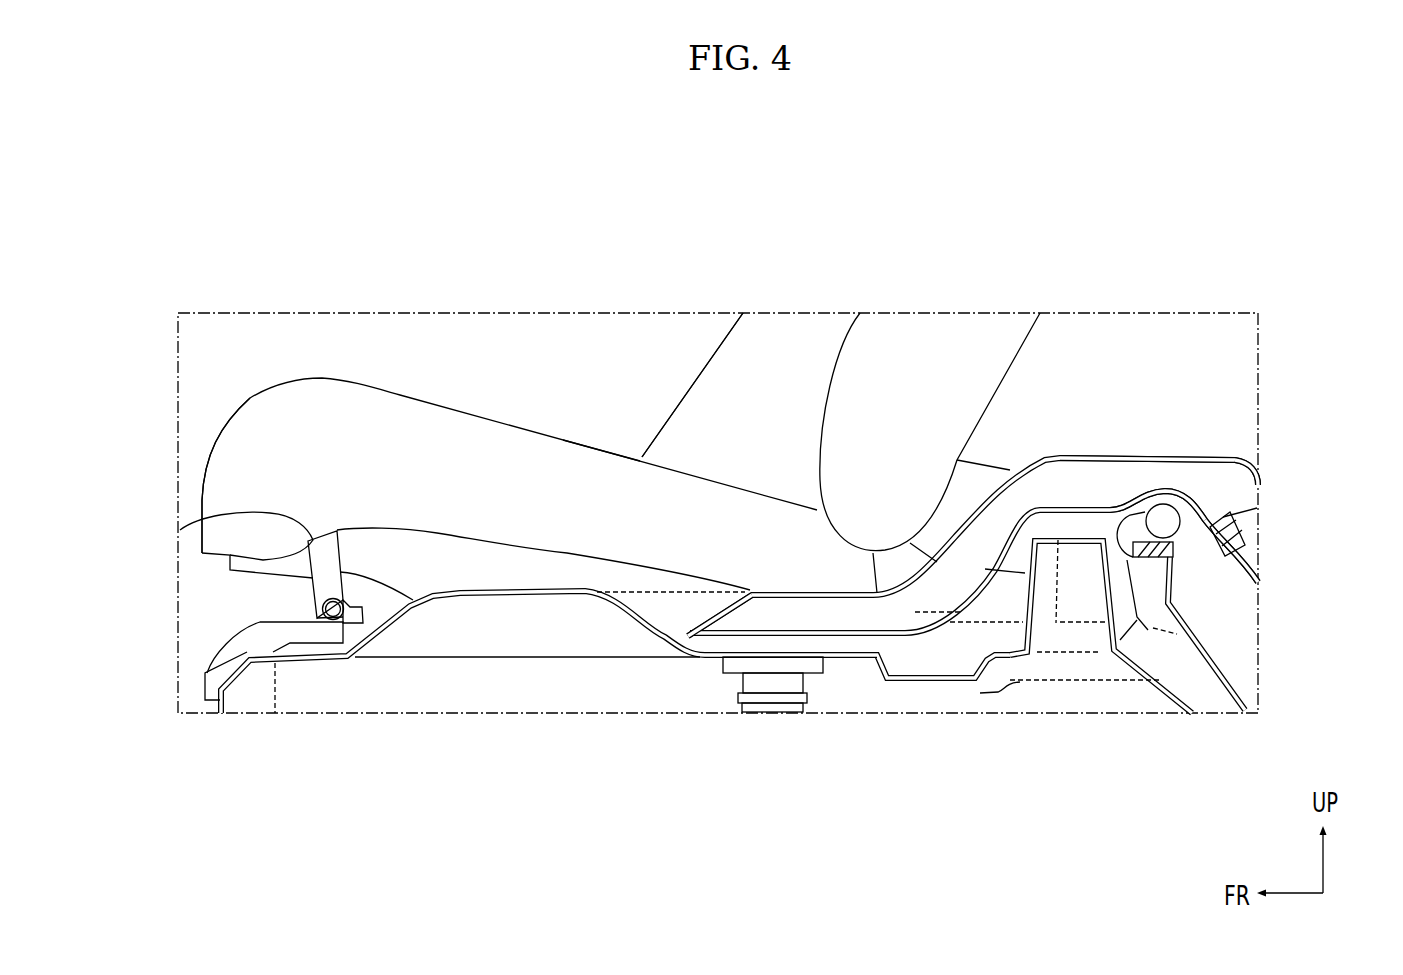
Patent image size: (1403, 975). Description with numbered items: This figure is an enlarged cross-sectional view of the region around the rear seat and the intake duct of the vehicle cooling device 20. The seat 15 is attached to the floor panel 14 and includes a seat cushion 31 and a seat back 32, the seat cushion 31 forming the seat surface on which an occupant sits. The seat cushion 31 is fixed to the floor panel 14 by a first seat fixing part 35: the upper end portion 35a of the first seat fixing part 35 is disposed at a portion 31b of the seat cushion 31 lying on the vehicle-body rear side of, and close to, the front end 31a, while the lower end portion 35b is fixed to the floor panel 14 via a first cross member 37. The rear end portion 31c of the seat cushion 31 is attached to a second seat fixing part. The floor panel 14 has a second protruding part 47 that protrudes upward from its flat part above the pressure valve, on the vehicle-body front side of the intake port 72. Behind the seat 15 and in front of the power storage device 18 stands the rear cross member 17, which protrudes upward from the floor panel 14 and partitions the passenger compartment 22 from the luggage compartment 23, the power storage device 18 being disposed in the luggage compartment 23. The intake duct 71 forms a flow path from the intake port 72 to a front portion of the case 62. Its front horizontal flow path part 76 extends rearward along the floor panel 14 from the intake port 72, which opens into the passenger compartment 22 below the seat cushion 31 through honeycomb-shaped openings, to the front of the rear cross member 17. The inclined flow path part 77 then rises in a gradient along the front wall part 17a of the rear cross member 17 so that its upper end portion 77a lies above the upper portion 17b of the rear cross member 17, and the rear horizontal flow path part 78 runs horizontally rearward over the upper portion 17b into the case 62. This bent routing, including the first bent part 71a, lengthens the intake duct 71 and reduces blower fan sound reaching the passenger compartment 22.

The floor panel 14 is at (775, 640).
The seat 15 is at (566, 429).
The rear cross member 17 is at (1102, 530).
The front wall part 17a is at (1043, 593).
The upper portion 17b is at (1057, 473).
The power storage device 18 is at (1223, 712).
The cooling device 20 is at (1233, 444).
The passenger compartment 22 is at (615, 370).
The luggage compartment 23 is at (1210, 370).
The seat cushion 31 is at (407, 395).
The front end 31a is at (243, 455).
The portion 31b is at (317, 503).
The rear end portion 31c is at (847, 572).
The seat back 32 is at (948, 330).
The first seat fixing part 35 is at (313, 590).
The upper end portion 35a is at (180, 530).
The lower end portion 35b is at (263, 628).
The first cross member 37 is at (207, 666).
The second protruding part 47 is at (513, 585).
The case 62 is at (1203, 658).
The intake duct 71 is at (1115, 437).
The first bent part 71a is at (937, 593).
The intake port 72 is at (712, 620).
The front horizontal flow path part 76 is at (857, 615).
The inclined flow path part 77 is at (980, 540).
The upper end portion 77a is at (962, 462).
The rear horizontal flow path part 78 is at (1163, 445).